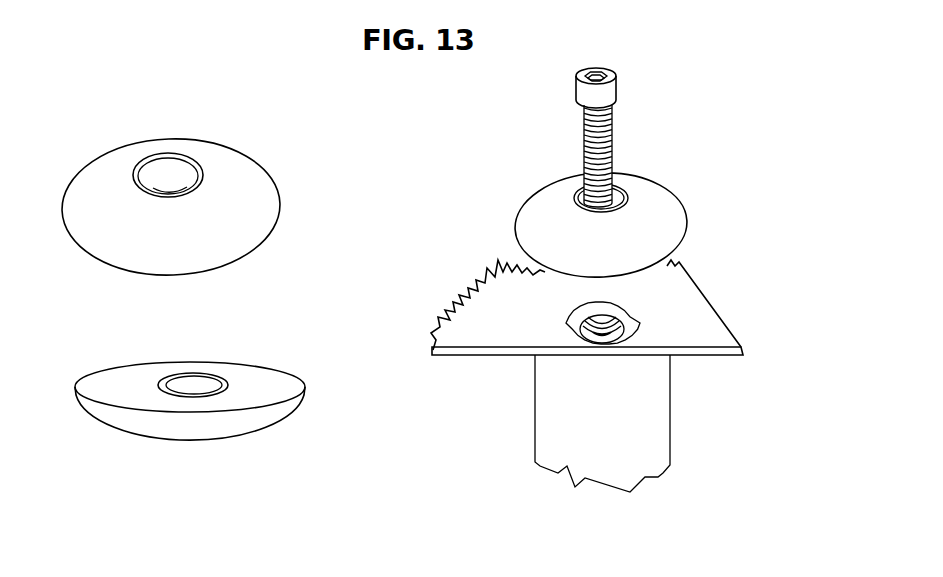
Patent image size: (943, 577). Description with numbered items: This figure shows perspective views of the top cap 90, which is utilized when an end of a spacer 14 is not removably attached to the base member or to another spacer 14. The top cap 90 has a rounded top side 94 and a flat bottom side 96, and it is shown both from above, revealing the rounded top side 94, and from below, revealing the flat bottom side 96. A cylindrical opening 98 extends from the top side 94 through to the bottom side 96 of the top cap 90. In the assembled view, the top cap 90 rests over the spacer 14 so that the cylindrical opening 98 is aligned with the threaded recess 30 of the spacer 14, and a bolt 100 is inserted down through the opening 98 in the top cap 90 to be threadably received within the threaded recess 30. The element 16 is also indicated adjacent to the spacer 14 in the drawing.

The spacer 14 is at (627, 422).
The mounting plate 16 is at (478, 335).
The threaded recess 30 is at (620, 322).
The top cap 90 is at (240, 140).
The rounded top side 94 is at (180, 243).
The flat bottom side 96 is at (108, 380).
The cylindrical opening 98 is at (157, 170).
The bolt 100 is at (613, 133).